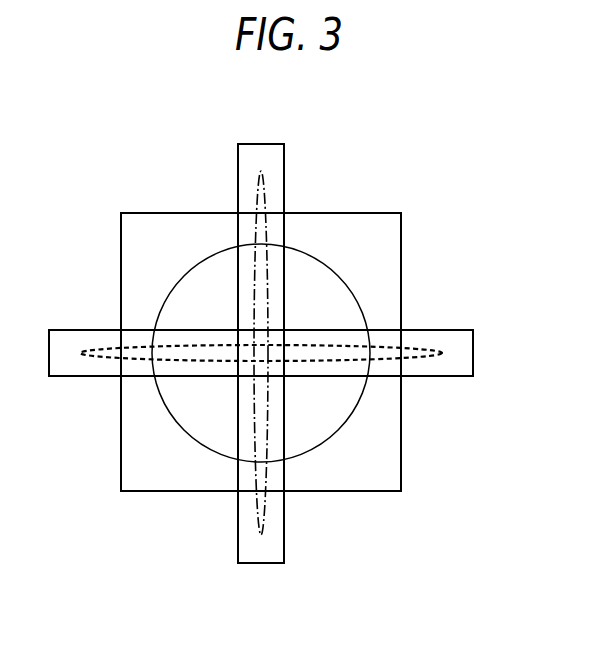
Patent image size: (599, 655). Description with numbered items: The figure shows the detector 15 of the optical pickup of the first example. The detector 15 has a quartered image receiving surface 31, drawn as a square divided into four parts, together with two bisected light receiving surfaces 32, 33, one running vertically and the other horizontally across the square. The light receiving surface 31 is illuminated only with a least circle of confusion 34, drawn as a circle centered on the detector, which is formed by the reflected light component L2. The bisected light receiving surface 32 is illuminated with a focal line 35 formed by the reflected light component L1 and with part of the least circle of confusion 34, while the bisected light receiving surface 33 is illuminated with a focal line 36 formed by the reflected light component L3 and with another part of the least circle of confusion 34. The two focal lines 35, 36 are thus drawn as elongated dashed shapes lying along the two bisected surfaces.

The detector 15 is at (420, 191).
The quartered image receiving surface 31 is at (177, 213).
The bisected light receiving surface 32 is at (259, 144).
The bisected light receiving surface 33 is at (73, 330).
The least circle of confusion 34 is at (358, 402).
The focal line 35 is at (268, 522).
The focal line 36 is at (418, 357).